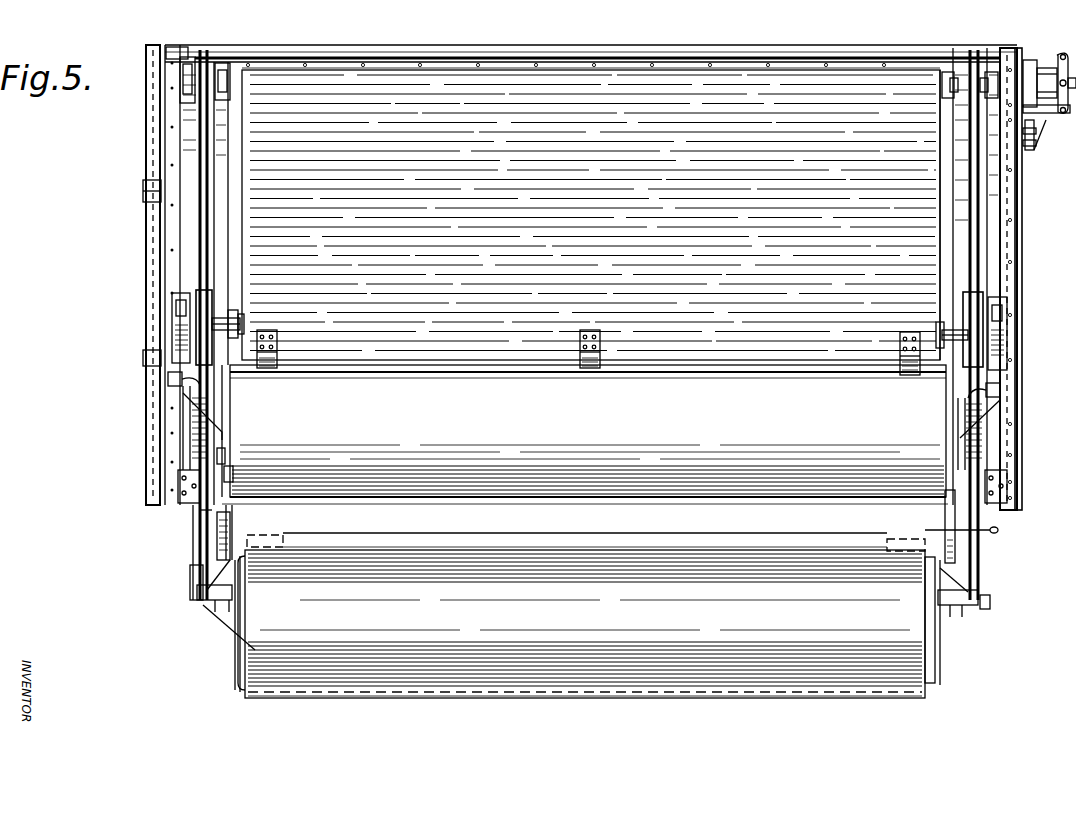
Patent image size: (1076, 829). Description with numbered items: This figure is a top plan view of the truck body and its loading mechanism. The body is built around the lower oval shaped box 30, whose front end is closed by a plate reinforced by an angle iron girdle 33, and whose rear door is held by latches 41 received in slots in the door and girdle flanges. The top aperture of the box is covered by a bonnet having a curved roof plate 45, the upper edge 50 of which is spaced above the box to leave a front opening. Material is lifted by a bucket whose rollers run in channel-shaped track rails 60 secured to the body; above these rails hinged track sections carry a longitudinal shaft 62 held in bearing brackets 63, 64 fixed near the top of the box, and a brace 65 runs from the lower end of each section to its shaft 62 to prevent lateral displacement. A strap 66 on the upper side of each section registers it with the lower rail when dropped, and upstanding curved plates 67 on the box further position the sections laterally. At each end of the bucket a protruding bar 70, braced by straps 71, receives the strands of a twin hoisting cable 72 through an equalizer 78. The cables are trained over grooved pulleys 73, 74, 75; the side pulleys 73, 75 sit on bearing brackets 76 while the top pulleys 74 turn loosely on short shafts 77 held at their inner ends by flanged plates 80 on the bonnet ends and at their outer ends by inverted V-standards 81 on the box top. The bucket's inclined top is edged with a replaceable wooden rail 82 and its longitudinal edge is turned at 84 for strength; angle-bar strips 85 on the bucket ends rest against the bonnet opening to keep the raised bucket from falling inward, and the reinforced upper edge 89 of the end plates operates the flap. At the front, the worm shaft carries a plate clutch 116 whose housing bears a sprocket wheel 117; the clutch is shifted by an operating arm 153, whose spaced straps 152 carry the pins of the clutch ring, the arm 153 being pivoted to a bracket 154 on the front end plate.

The lower oval shaped box 30 is at (585, 434).
The angle iron girdle 33 is at (1008, 220).
The latch 41 is at (172, 50).
The curved roof plate 45 is at (591, 215).
The upper edge of bonnet roof 50 is at (660, 342).
The track rails 60 is at (229, 517).
The shaft 62 is at (170, 377).
The bearing bracket 63 is at (253, 362).
The bearing bracket 64 is at (178, 385).
The brace 65 is at (190, 412).
The strap 66 is at (237, 470).
The upstanding curved plates 67 is at (220, 457).
The protruding bar 70 is at (193, 600).
The straps 71 is at (218, 604).
The twin hoisting cable 72 is at (198, 562).
The grooved pulley 73 is at (197, 511).
The grooved pulley 74 is at (228, 284).
The grooved pulley 75 is at (215, 86).
The bearing brackets 76 is at (230, 95).
The short shafts 77 is at (220, 323).
The equalizer 78 is at (200, 588).
The flanged plates 80 is at (244, 312).
The inverted V-standards 81 is at (178, 308).
The wooden rail 82 is at (286, 697).
The turned longitudinal edge 84 is at (590, 552).
The angle-bar strips 85 is at (238, 668).
The reenforced upper edge 89 is at (250, 652).
The plate clutch 116 is at (1023, 52).
The sprocket wheel 117 is at (1025, 68).
The spaced straps 152 is at (1020, 92).
The operating arm 153 is at (1062, 113).
The bracket 154 is at (1030, 122).